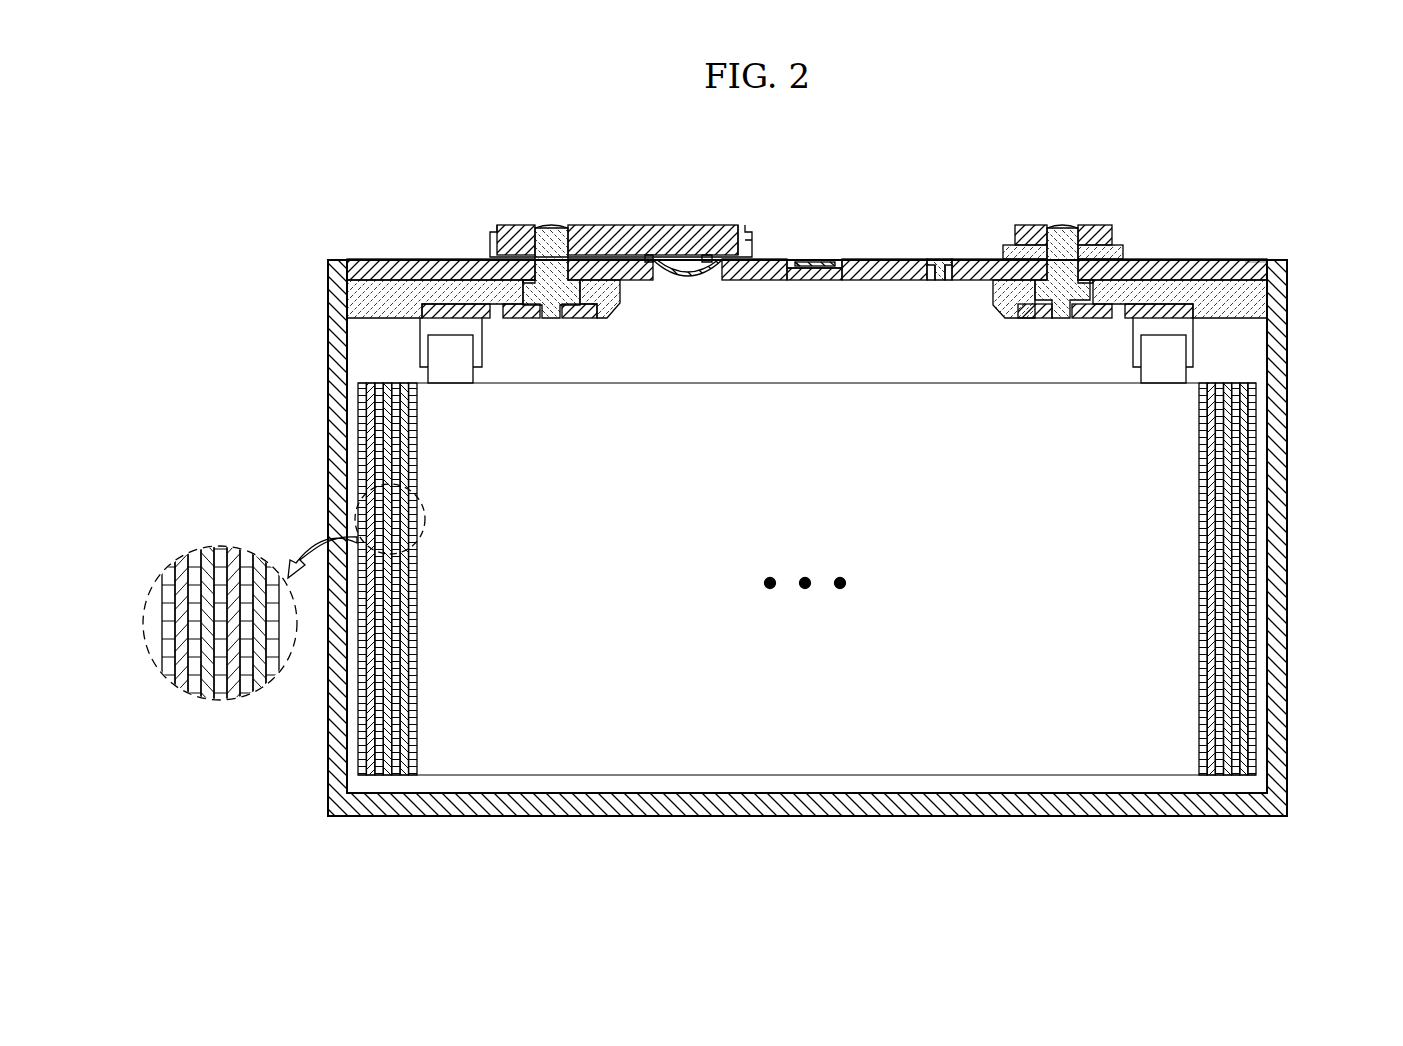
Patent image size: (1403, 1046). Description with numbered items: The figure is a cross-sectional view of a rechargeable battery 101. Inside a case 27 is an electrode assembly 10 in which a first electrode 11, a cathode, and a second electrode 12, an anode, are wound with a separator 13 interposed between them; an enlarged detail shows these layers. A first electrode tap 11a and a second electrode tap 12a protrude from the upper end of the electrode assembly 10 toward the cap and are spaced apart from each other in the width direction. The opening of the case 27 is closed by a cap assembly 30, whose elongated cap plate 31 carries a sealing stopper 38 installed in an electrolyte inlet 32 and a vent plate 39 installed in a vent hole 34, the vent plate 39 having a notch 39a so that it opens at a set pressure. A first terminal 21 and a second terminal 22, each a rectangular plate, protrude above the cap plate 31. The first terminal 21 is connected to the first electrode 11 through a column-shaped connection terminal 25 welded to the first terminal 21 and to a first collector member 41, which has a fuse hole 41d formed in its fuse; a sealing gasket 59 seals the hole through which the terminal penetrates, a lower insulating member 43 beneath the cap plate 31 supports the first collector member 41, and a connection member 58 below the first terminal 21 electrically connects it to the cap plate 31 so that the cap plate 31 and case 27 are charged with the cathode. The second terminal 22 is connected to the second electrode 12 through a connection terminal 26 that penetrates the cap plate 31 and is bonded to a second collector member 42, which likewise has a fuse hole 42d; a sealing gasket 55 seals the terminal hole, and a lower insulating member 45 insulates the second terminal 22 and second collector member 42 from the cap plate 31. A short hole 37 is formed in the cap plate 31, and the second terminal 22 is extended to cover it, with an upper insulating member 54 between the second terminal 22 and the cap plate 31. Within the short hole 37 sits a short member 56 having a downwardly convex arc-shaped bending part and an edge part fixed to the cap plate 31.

The electrode assembly 10 is at (699, 625).
The first electrode 11 is at (182, 690).
The second electrode 12 is at (207, 690).
The separator 13 is at (198, 562).
The first electrode tap 11a is at (1160, 352).
The second electrode tap 12a is at (430, 350).
The first terminal 21 is at (1094, 236).
The second terminal 22 is at (525, 232).
The connection terminal 25 is at (1062, 235).
The connection terminal 26 is at (552, 232).
The case 27 is at (1278, 522).
The cap assembly 30 is at (780, 246).
The cap plate 31 is at (1245, 263).
The electrolyte inlet 32 is at (943, 280).
The vent hole 34 is at (812, 282).
The short hole 37 is at (661, 264).
The sealing stopper 38 is at (941, 260).
The vent plate 39 is at (835, 262).
The notch 39a is at (813, 262).
The first collector member 41 is at (1180, 305).
The fuse hole 41d is at (1120, 300).
The second collector member 42 is at (412, 298).
The fuse hole 42d is at (535, 283).
The lower insulating member 43 is at (1248, 300).
The lower insulating member 45 is at (365, 297).
The upper insulating member 54 is at (752, 232).
The sealing gasket 55 is at (493, 298).
The short member 56 is at (689, 272).
The connection member 58 is at (1117, 252).
The sealing gasket 59 is at (1003, 290).
The rechargeable battery 101 is at (931, 179).